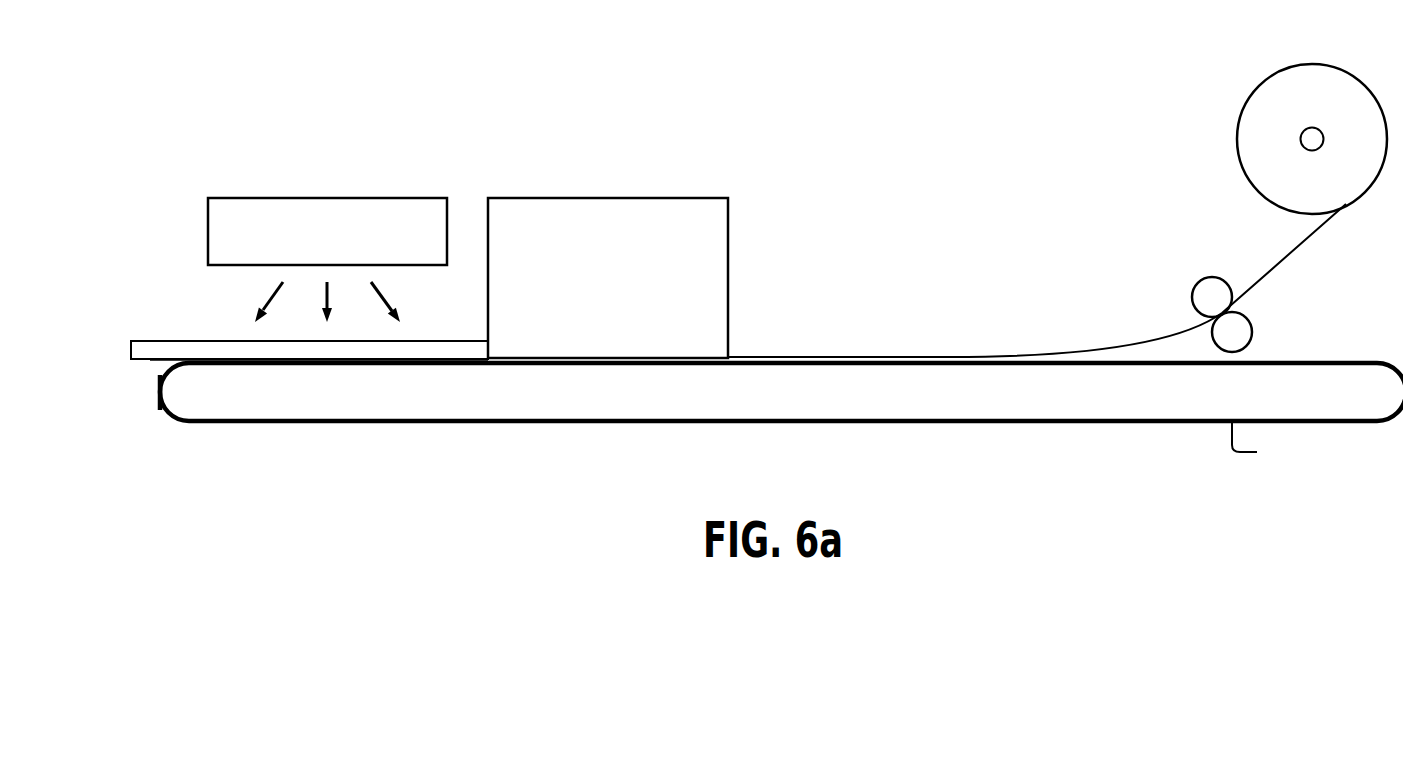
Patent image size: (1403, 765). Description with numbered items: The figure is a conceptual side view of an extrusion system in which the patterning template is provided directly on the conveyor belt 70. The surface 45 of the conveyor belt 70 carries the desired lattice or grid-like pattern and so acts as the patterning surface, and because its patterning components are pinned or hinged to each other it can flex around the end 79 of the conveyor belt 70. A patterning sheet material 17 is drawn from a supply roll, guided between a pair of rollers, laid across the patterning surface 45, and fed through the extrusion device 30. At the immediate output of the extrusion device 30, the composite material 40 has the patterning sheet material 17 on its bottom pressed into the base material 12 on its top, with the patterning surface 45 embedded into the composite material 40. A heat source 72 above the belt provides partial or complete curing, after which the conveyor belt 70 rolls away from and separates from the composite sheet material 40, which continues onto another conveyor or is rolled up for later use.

The base material 12 is at (206, 350).
The patterning sheet material 17 is at (153, 361).
The extrusion device 30 is at (607, 198).
The composite material 40 is at (131, 352).
The patterning surface 45 is at (1259, 445).
The conveyor belt 70 is at (478, 392).
The heat source 72 is at (327, 198).
The end of the conveyor belt 79 is at (160, 393).